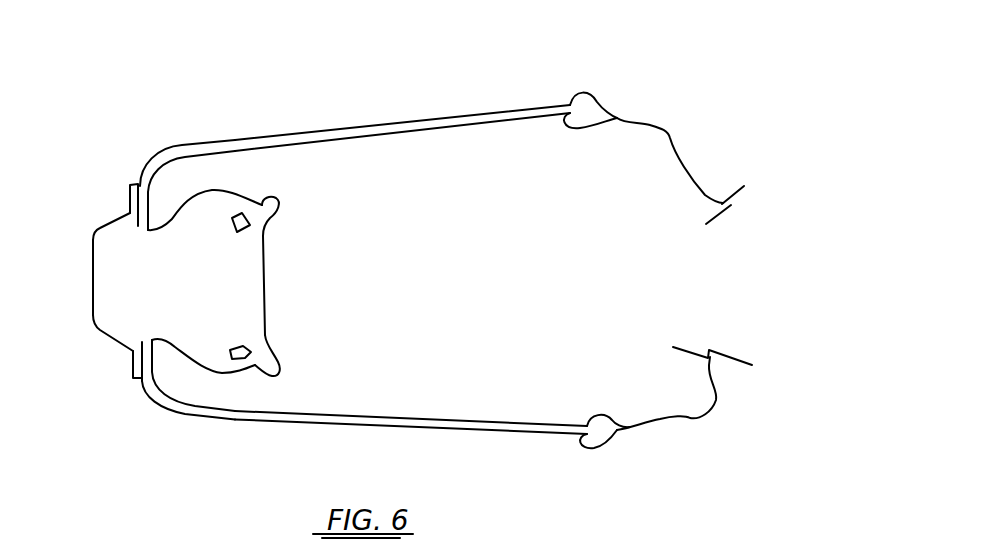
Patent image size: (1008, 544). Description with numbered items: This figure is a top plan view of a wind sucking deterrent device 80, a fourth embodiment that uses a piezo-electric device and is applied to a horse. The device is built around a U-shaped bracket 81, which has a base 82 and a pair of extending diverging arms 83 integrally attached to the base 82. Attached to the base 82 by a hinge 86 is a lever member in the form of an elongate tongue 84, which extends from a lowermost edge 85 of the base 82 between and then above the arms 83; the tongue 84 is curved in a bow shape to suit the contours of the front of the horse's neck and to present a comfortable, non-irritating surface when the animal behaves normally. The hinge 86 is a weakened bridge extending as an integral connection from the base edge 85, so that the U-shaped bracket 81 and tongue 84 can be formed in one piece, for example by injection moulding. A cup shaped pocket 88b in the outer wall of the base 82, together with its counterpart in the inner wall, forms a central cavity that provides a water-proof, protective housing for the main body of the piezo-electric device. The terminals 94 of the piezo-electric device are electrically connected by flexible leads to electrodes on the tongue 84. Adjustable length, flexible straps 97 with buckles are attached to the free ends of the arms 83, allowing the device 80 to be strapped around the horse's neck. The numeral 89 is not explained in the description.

The wind sucking deterrent device 80 is at (156, 83).
The U-shaped bracket 81 is at (257, 131).
The base 82 is at (119, 375).
The arms 83 is at (520, 108).
The tongue 84 is at (222, 374).
The lowermost edge 85 is at (147, 384).
The hinge 86 is at (137, 270).
The cup shaped pocket 88b is at (103, 307).
The side edge 89 is at (264, 237).
The terminals 94 is at (233, 213).
The flexible straps 97 is at (667, 132).